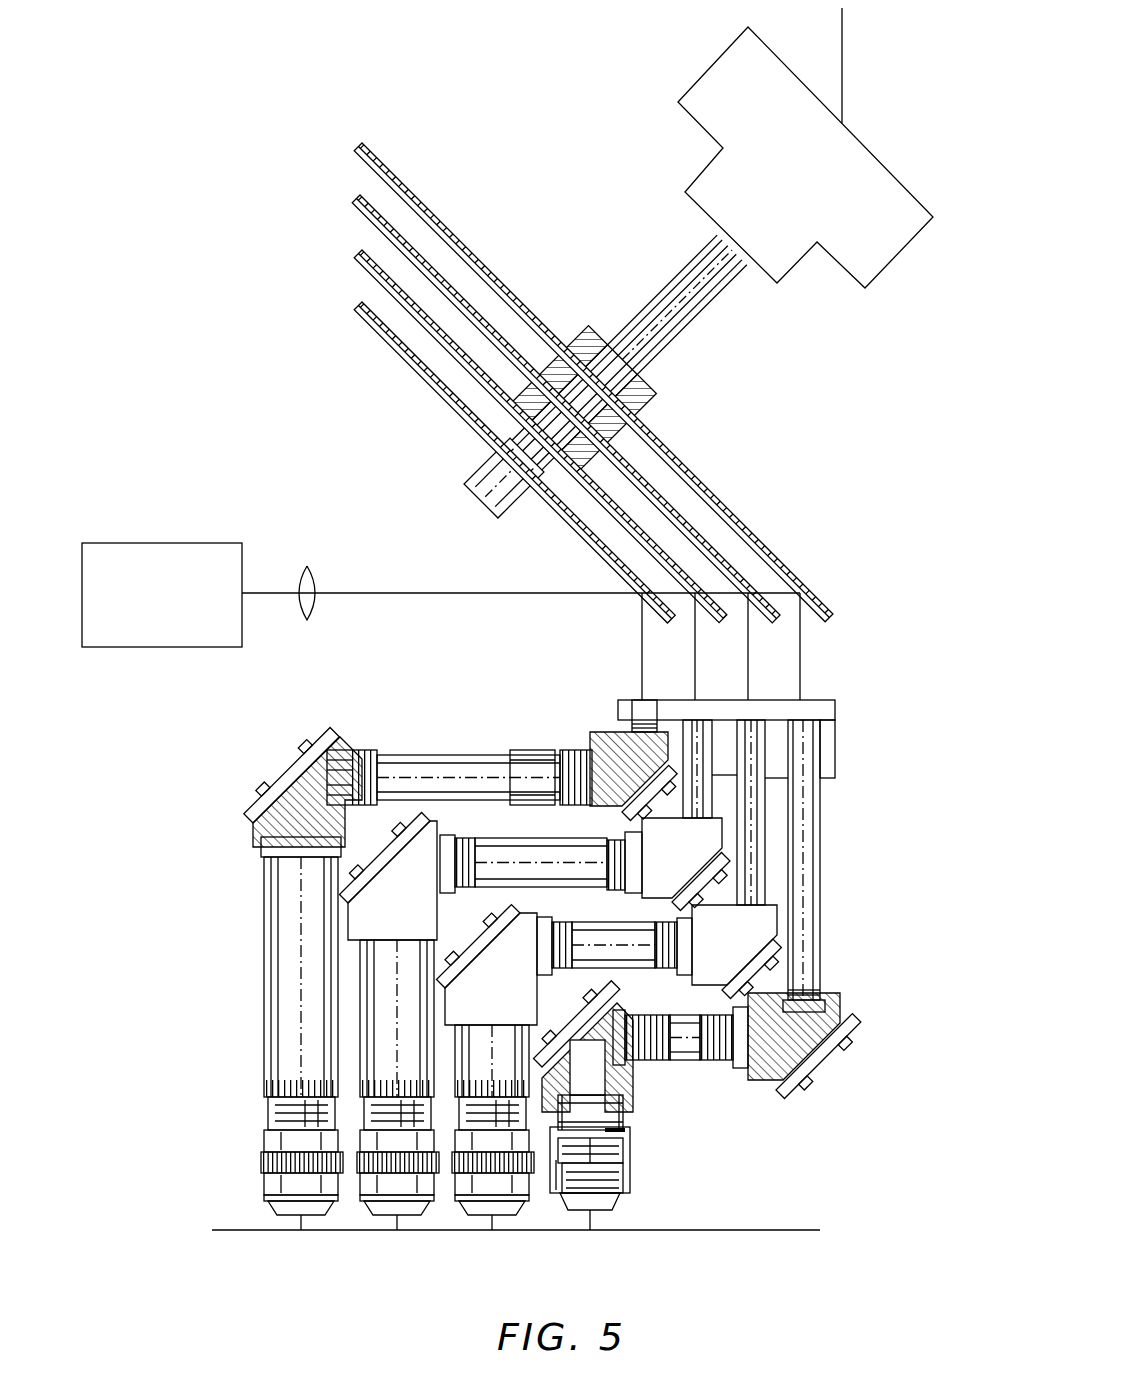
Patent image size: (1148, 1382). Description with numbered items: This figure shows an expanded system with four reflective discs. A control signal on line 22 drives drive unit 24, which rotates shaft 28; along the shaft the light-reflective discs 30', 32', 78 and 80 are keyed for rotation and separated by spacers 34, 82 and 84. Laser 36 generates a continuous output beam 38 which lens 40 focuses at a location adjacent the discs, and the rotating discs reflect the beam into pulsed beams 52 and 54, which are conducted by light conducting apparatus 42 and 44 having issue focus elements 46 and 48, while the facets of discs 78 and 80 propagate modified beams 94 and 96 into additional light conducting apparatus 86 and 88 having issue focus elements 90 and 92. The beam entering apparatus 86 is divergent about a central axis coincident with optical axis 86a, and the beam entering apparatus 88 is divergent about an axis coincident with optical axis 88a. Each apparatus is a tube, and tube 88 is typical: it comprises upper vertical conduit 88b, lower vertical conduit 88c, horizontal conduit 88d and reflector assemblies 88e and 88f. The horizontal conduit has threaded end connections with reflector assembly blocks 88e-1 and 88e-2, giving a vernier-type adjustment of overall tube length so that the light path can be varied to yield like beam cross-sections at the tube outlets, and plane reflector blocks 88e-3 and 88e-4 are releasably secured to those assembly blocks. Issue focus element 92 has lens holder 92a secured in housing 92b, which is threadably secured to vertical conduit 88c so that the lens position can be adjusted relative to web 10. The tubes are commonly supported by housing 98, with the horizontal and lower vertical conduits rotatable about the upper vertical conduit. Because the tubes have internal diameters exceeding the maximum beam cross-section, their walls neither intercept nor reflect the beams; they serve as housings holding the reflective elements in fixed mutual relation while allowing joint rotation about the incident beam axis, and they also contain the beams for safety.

The web 10 is at (257, 1232).
The line 22 is at (842, 33).
The drive unit 24 is at (708, 88).
The shaft 28 is at (672, 273).
The reflective disc 30' is at (494, 462).
The reflective disc 32' is at (505, 436).
The spacer 34 is at (500, 412).
The laser 36 is at (178, 543).
The output beam 38 is at (450, 598).
The lens 40 is at (312, 568).
The light conducting apparatus 42 is at (256, 920).
The light conducting apparatus 44 is at (384, 945).
The issue focus element 46 is at (272, 1187).
The issue focus element 48 is at (387, 1203).
The pulsed beam 52 is at (637, 648).
The pulsed beam 54 is at (692, 650).
The reflective disc 78 is at (723, 550).
The reflective disc 80 is at (720, 500).
The spacer 82 is at (523, 387).
The spacer 84 is at (622, 425).
The light conducting apparatus 86 is at (778, 852).
The optical axis 86a is at (770, 818).
The light conducting apparatus 88 is at (834, 966).
The optical axis 88a is at (805, 892).
The vertical conduit 88b is at (820, 932).
The vertical conduit 88c is at (625, 1117).
The horizontal conduit 88d is at (693, 1063).
The reflector assembly 88e is at (866, 1019).
The reflector assembly block 88e-1 is at (763, 1082).
The reflector assembly block 88e-2 is at (632, 999).
The plane reflector block 88e-3 is at (815, 1050).
The plane reflector block 88e-4 is at (580, 1028).
The reflector assembly 88f is at (532, 1056).
The issue focus element 90 is at (517, 1183).
The issue focus element 92 is at (646, 1196).
The lens holder 92a is at (606, 1212).
The housing 92b is at (632, 1160).
The modified beam 94 is at (745, 650).
The modified beam 96 is at (803, 652).
The housing 98 is at (835, 712).